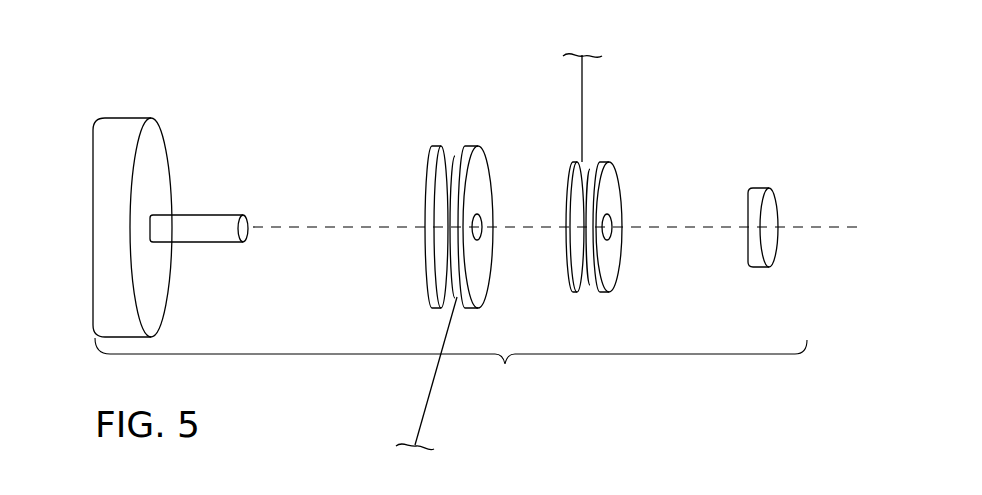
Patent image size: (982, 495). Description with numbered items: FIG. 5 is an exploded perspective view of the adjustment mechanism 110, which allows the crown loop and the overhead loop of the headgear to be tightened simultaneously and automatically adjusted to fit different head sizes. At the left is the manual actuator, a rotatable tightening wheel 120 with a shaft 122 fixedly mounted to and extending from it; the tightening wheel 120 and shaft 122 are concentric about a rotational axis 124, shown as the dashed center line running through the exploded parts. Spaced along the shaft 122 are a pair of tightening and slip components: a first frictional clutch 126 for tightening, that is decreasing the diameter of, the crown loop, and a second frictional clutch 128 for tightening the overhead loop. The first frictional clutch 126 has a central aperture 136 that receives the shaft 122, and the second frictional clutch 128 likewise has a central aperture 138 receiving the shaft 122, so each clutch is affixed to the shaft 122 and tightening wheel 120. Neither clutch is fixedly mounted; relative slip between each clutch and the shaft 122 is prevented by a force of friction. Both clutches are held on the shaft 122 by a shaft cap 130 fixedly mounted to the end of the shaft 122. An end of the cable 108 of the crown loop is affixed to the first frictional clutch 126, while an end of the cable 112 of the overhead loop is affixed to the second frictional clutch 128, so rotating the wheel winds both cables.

The cable 108 is at (444, 337).
The adjustment mechanism 110 is at (451, 367).
The cable 112 is at (583, 75).
The tightening wheel 120 is at (125, 118).
The shaft 122 is at (221, 215).
The rotational axis 124 is at (337, 227).
The first frictional clutch 126 is at (470, 146).
The second frictional clutch 128 is at (600, 162).
The shaft cap 130 is at (762, 188).
The central aperture 136 is at (478, 218).
The central aperture 138 is at (607, 215).